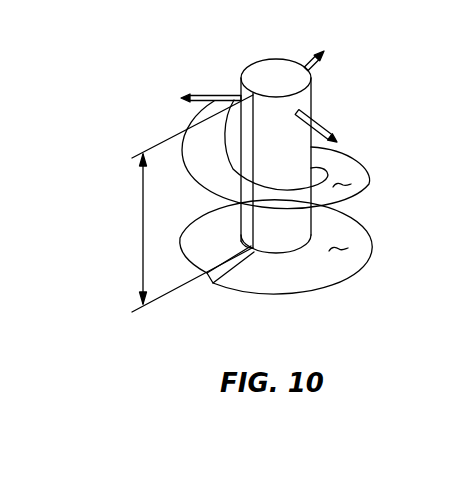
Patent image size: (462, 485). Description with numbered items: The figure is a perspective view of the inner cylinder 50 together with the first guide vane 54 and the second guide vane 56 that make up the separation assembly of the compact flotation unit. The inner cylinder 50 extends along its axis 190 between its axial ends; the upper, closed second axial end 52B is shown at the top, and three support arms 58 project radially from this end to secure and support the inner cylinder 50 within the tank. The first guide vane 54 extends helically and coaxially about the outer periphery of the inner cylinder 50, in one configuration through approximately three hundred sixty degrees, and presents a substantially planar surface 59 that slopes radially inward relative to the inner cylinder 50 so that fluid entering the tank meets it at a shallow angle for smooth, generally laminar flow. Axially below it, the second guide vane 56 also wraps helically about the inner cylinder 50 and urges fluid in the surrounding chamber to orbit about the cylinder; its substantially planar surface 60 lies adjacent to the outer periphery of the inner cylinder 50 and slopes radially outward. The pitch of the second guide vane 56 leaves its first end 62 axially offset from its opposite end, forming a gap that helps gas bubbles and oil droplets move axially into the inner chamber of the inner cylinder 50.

The inner cylinder 50 is at (311, 100).
The second axial end 52B is at (267, 60).
The first guide vane 54 is at (372, 182).
The second guide vane 56 is at (279, 207).
The support arms 58 is at (202, 95).
The planar surface 59 is at (343, 189).
The planar surface 60 is at (345, 248).
The first end 62 is at (210, 272).
The axis 190 is at (186, 203).